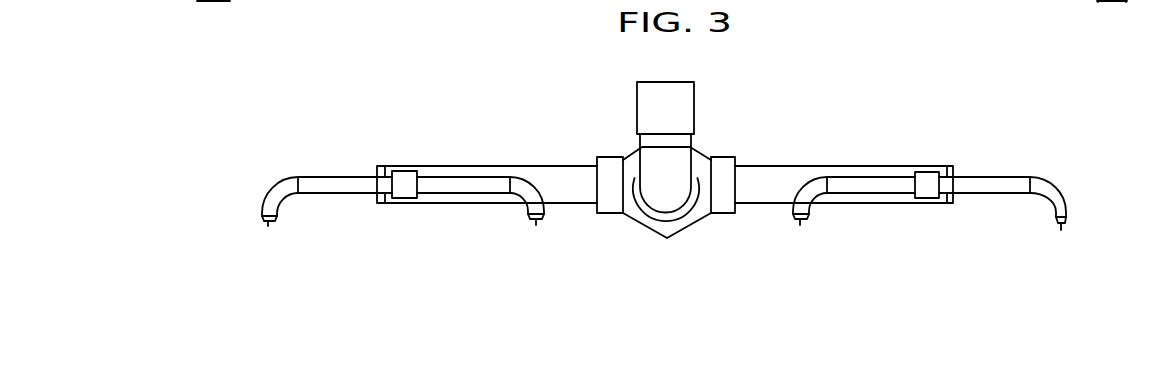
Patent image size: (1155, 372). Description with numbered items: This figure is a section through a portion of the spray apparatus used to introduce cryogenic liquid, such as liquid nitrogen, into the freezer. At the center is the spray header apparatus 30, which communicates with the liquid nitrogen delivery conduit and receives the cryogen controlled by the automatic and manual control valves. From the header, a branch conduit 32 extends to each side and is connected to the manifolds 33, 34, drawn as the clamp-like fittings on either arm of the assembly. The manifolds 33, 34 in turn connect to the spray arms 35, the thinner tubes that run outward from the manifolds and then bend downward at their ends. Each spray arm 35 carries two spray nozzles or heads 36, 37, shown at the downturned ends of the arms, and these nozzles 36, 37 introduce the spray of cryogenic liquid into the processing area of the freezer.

The spray header apparatus 30 is at (712, 126).
The branch conduit 32 is at (773, 168).
The manifold 33 is at (928, 178).
The manifold 34 is at (404, 177).
The spray arm 35 is at (356, 194).
The spray nozzle 36 is at (537, 226).
The spray nozzle 37 is at (268, 227).